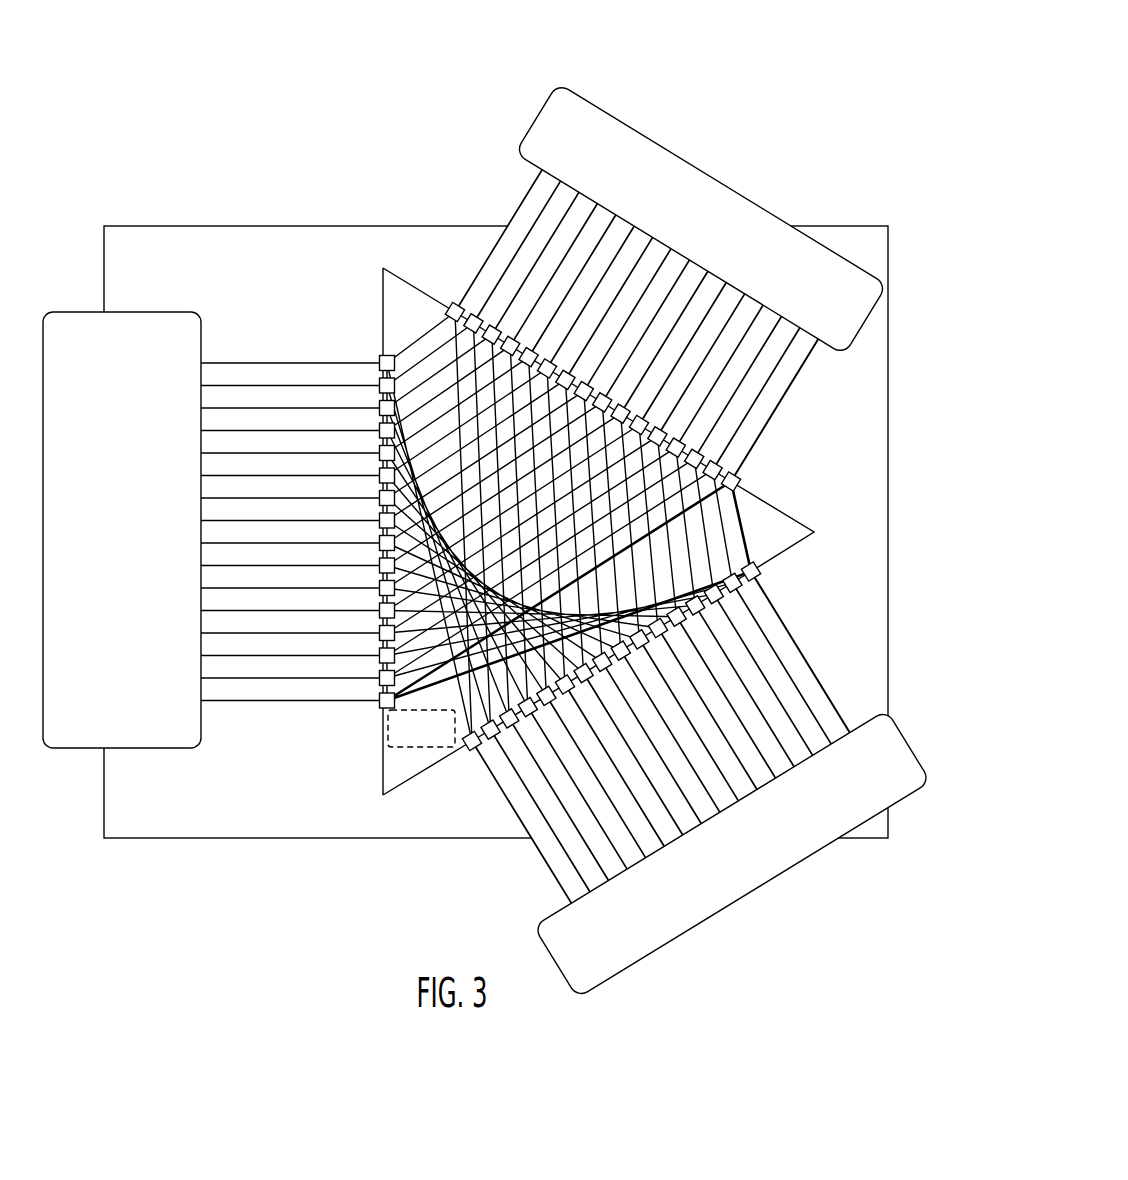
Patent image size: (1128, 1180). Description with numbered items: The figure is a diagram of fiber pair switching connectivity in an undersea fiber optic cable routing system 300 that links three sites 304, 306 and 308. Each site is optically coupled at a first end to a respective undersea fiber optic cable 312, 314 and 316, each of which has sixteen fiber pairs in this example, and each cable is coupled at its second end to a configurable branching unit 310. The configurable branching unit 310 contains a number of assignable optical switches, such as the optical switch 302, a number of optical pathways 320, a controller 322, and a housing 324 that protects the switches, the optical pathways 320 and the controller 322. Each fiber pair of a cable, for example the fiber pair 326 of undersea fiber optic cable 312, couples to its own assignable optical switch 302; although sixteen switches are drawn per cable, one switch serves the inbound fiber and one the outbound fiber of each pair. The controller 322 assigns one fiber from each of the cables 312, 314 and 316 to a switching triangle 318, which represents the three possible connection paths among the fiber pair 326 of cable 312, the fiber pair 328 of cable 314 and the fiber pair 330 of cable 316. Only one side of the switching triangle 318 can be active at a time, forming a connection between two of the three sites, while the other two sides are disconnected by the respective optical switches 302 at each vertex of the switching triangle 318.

The undersea fiber optic cable routing system 300 is at (486, 505).
The optical switch 302 is at (380, 713).
The site 304 is at (104, 535).
The site 306 is at (725, 870).
The site 308 is at (679, 227).
The configurable branching unit 310 is at (375, 238).
The undersea fiber optic cable 312 is at (318, 354).
The undersea fiber optic cable 314 is at (493, 790).
The undersea fiber optic cable 316 is at (503, 213).
The switching triangle 318 is at (756, 541).
The optical pathways 320 is at (497, 435).
The controller 322 is at (405, 742).
The housing 324 is at (383, 787).
The fiber pair 326 is at (237, 702).
The fiber pair 328 is at (806, 652).
The fiber pair 330 is at (776, 405).